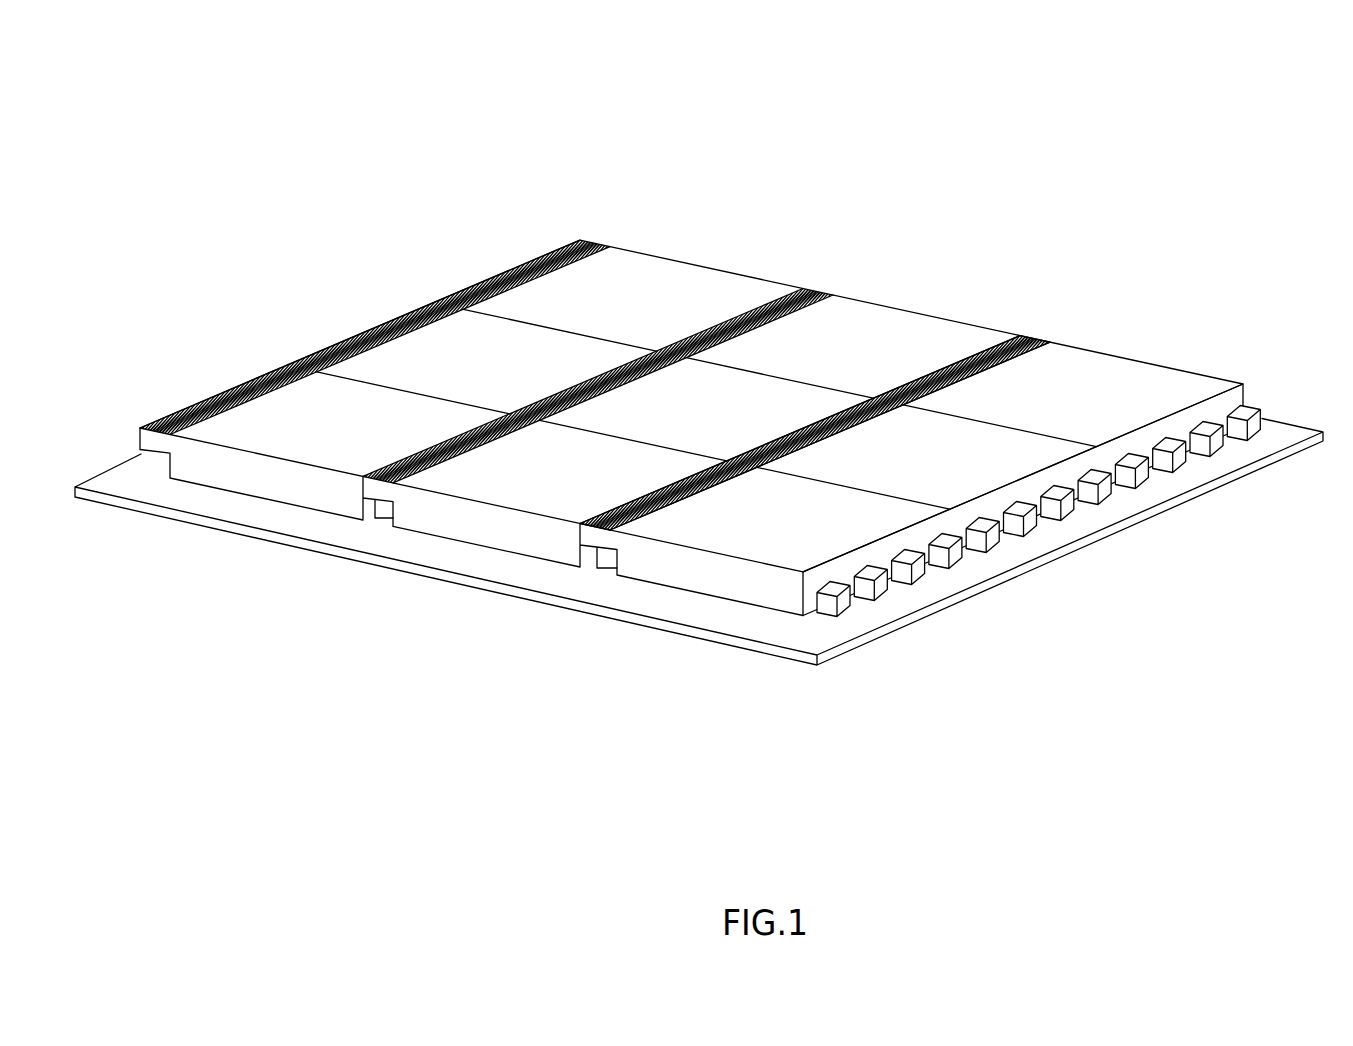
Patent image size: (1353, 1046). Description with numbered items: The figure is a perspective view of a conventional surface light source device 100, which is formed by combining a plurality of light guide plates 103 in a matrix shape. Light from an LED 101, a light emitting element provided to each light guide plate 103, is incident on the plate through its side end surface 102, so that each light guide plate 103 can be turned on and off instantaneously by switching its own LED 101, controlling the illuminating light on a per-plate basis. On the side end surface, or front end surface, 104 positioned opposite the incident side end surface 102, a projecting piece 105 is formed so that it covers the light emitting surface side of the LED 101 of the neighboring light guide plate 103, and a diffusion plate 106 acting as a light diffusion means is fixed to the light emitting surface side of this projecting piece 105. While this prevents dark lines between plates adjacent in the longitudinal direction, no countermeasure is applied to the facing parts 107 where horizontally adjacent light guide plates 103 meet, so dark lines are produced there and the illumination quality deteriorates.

The surface light source device 100 is at (293, 170).
The LED 101 is at (955, 560).
The side end surface 102 is at (883, 555).
The light guide plate 103 is at (446, 538).
The side end surface (front end surface) 104 is at (598, 568).
The projecting piece 105 is at (592, 527).
The diffusion plate 106 is at (735, 455).
The facing parts 107 is at (855, 485).